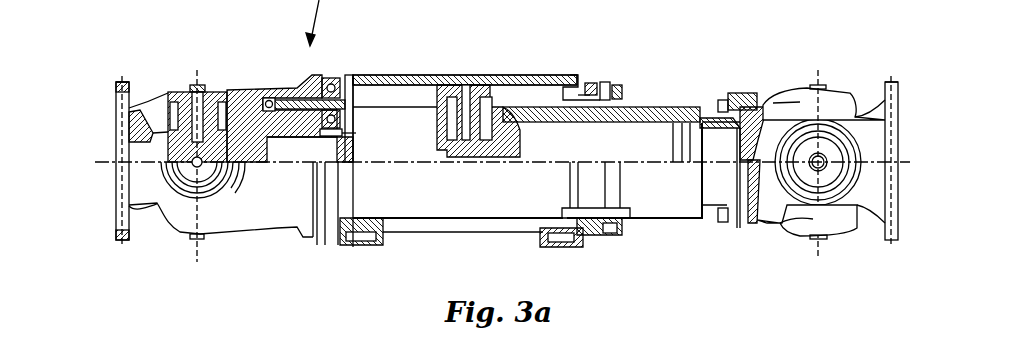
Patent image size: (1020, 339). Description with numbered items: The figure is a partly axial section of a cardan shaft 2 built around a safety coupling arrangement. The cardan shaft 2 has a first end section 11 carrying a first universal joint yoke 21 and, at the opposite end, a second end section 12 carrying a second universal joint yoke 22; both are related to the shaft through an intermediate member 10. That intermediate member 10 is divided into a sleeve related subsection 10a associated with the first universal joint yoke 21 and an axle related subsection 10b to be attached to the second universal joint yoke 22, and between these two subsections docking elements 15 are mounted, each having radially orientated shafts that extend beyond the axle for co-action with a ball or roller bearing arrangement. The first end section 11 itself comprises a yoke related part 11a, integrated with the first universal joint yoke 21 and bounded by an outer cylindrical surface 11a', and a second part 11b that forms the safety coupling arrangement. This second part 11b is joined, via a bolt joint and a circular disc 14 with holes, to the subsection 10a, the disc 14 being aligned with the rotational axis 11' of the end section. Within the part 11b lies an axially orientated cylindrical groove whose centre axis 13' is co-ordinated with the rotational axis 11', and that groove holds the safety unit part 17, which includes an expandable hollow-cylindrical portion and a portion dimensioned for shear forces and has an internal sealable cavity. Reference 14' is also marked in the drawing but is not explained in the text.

The cardan shaft 2 is at (602, 62).
The intermediate member 10 is at (420, 143).
The subsection of the intermediate member 10a is at (417, 90).
The subsection of the intermediate member 10b is at (582, 153).
The first end section 11 is at (249, 180).
The rotational axis 11' is at (313, 230).
The yoke related part 11a is at (205, 182).
The outer cylindrical surface 11a' is at (215, 100).
The second part 11b is at (282, 128).
The second end section 12 is at (653, 220).
The centre axis 13' is at (354, 245).
The disc 14 is at (345, 95).
The bearing seal 14' is at (497, 219).
The docking elements 15 is at (493, 97).
The safety unit part 17 is at (284, 100).
The first universal joint yoke 21 is at (200, 244).
The second universal joint yoke 22 is at (797, 233).